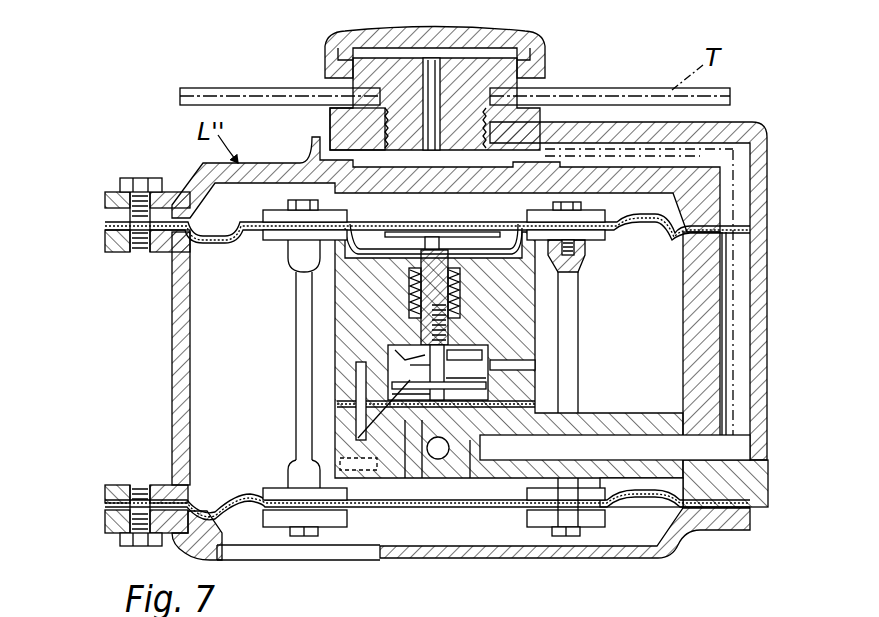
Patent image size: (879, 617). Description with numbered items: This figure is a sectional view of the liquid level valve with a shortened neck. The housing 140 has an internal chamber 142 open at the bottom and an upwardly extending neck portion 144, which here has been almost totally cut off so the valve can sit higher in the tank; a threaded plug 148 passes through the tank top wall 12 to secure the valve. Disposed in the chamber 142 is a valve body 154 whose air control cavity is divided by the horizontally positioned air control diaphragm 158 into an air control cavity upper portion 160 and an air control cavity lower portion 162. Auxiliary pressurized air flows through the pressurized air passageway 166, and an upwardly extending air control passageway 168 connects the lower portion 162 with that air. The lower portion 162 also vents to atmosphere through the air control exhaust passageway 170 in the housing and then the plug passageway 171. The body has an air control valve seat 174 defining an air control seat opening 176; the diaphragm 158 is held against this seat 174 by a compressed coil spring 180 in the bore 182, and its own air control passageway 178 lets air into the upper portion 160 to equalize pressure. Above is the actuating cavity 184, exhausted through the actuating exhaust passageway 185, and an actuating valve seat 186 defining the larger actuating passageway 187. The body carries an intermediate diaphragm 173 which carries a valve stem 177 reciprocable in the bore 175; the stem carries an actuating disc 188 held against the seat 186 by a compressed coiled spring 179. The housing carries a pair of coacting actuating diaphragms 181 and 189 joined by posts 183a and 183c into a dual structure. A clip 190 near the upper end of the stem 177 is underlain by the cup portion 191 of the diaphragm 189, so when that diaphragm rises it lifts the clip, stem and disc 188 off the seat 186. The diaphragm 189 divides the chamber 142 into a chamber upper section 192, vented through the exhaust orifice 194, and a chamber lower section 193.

The top wall 12 is at (250, 86).
The threaded plug 148 is at (326, 40).
The neck portion 144 is at (562, 180).
The plug passageway 171 is at (440, 114).
The air control exhaust passageway 170 is at (700, 150).
The exhaust orifice 194 is at (110, 225).
The housing 140 is at (172, 290).
The internal chamber 142 is at (262, 365).
The actuating diaphragm 181 is at (217, 503).
The air control valve seat 174 is at (472, 425).
The clip 190 is at (480, 232).
The cup portion 191 is at (378, 245).
The chamber upper section 192 is at (620, 207).
The actuating diaphragm 189 is at (238, 225).
The valve body 154 is at (305, 268).
The post 183a is at (293, 482).
The bore 175 is at (408, 296).
The compressed coiled spring 179 is at (462, 292).
The actuating disc 188 is at (410, 340).
The actuating cavity 184 is at (482, 333).
The air control diaphragm 158 is at (500, 392).
The air control cavity upper portion 160 is at (375, 403).
The actuating valve seat 186 is at (410, 350).
The actuating exhaust passageway 185 is at (405, 355).
The compressed coil spring 180 is at (400, 397).
The intermediate diaphragm 173 is at (465, 345).
The actuating passageway 187 is at (522, 362).
The bore 182 is at (518, 382).
The air control cavity lower portion 162 is at (358, 455).
The pressurized air passageway 166 is at (448, 460).
The air control seat opening 176 is at (405, 420).
The air control passageway 178 is at (425, 445).
The air control passageway 168 is at (470, 447).
The post 183c is at (575, 487).
The valve stem 177 is at (532, 312).
The chamber lower section 193 is at (641, 513).